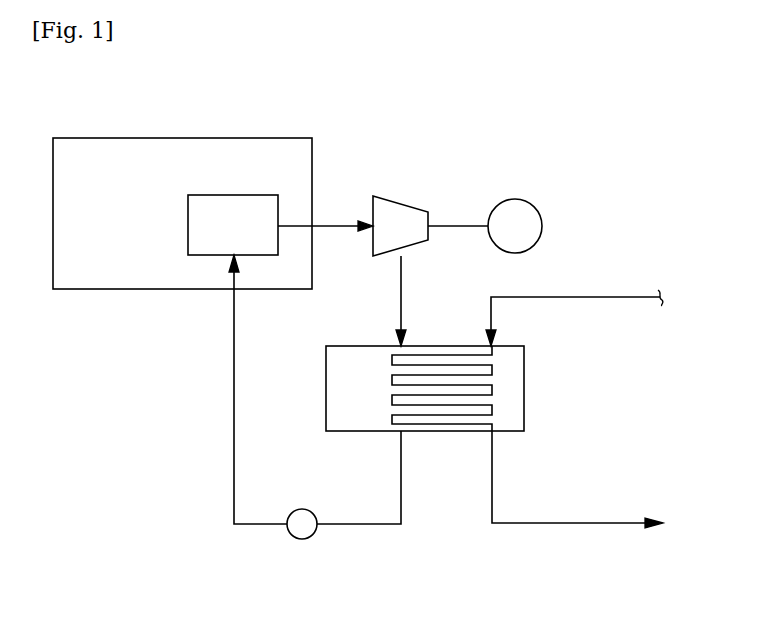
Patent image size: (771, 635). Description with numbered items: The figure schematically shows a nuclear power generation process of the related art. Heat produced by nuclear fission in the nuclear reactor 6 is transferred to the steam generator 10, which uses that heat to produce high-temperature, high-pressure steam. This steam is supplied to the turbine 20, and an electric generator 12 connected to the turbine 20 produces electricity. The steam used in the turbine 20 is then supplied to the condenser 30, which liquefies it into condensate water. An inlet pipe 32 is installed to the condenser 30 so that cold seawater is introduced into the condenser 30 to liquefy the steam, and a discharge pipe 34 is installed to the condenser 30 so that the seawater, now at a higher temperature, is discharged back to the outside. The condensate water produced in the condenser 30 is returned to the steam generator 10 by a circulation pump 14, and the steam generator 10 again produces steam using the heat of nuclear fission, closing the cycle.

The nuclear reactor 6 is at (98, 138).
The steam generator 10 is at (232, 195).
The electric generator 12 is at (515, 199).
The circulation pump 14 is at (304, 540).
The turbine 20 is at (403, 196).
The condenser 30 is at (326, 388).
The inlet pipe 32 is at (598, 297).
The discharge pipe 34 is at (598, 525).